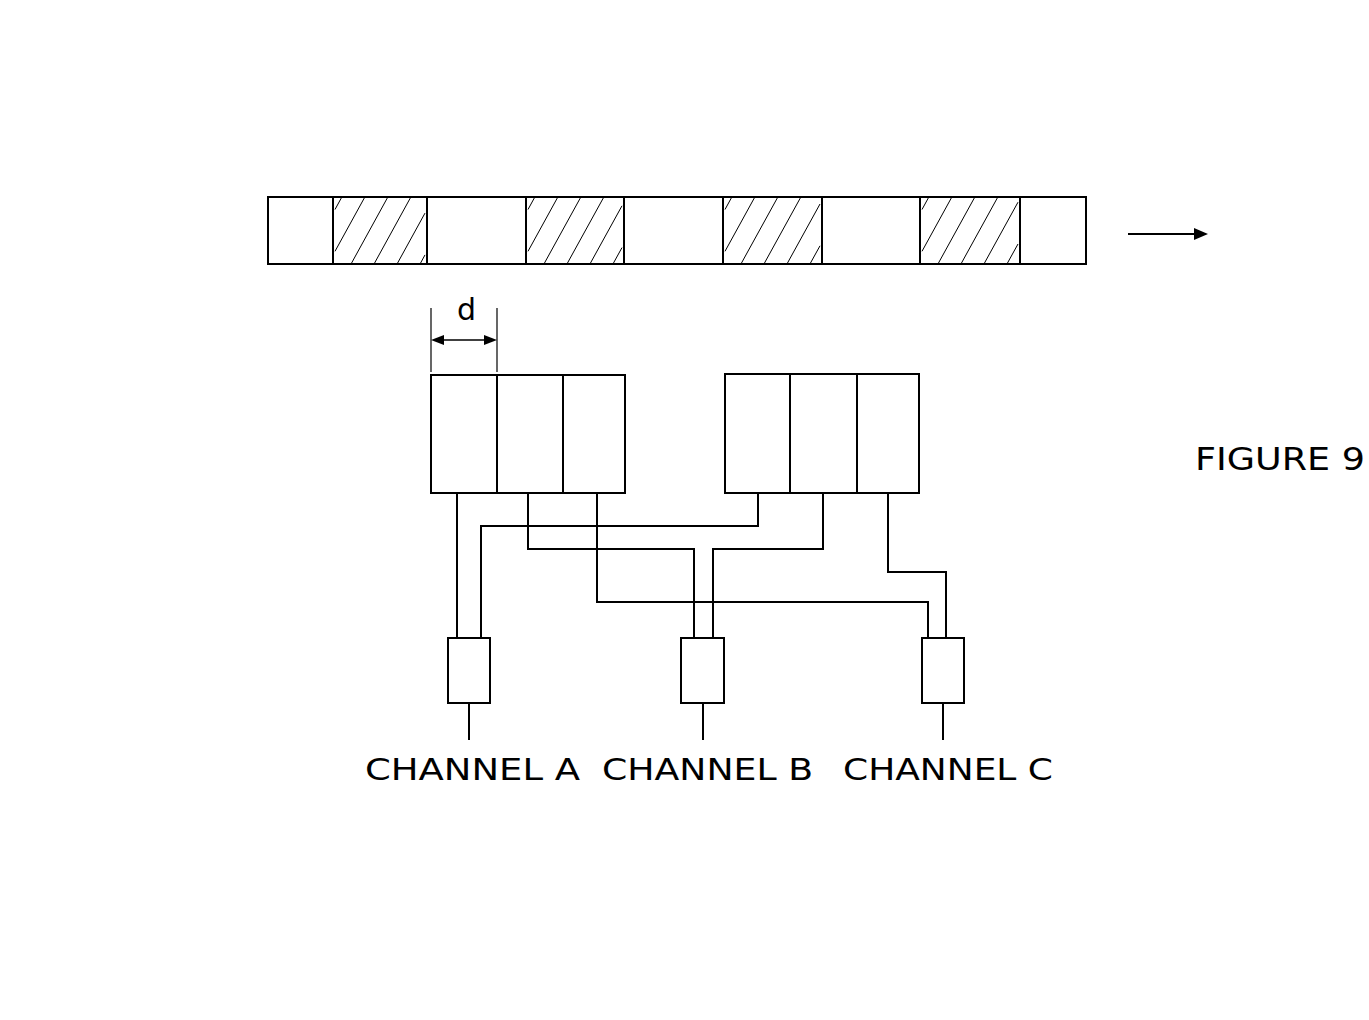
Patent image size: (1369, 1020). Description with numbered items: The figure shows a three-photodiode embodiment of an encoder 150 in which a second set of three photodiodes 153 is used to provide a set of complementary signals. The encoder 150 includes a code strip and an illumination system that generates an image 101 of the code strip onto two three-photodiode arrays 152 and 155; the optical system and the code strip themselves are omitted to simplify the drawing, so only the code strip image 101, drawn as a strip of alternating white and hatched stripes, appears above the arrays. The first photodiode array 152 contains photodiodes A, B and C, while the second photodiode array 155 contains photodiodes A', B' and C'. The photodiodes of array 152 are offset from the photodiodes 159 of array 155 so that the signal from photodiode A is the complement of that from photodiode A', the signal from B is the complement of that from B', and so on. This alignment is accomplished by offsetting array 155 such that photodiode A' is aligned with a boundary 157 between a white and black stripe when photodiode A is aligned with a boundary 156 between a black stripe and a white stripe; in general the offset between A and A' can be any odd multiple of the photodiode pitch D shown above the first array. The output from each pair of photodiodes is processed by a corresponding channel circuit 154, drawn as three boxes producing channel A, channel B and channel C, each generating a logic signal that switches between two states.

The encoder 150 is at (172, 202).
The image of the code strip 101 is at (1037, 198).
The boundary between a black stripe and a white stripe 156 is at (430, 215).
The boundary between a white and black stripe 157 is at (719, 207).
The photodiode array 152 is at (431, 427).
The second set of photodiodes 153 is at (592, 383).
The photodiode array 155 is at (725, 428).
The photodiodes 159 is at (887, 383).
The channel circuit 154 is at (448, 670).